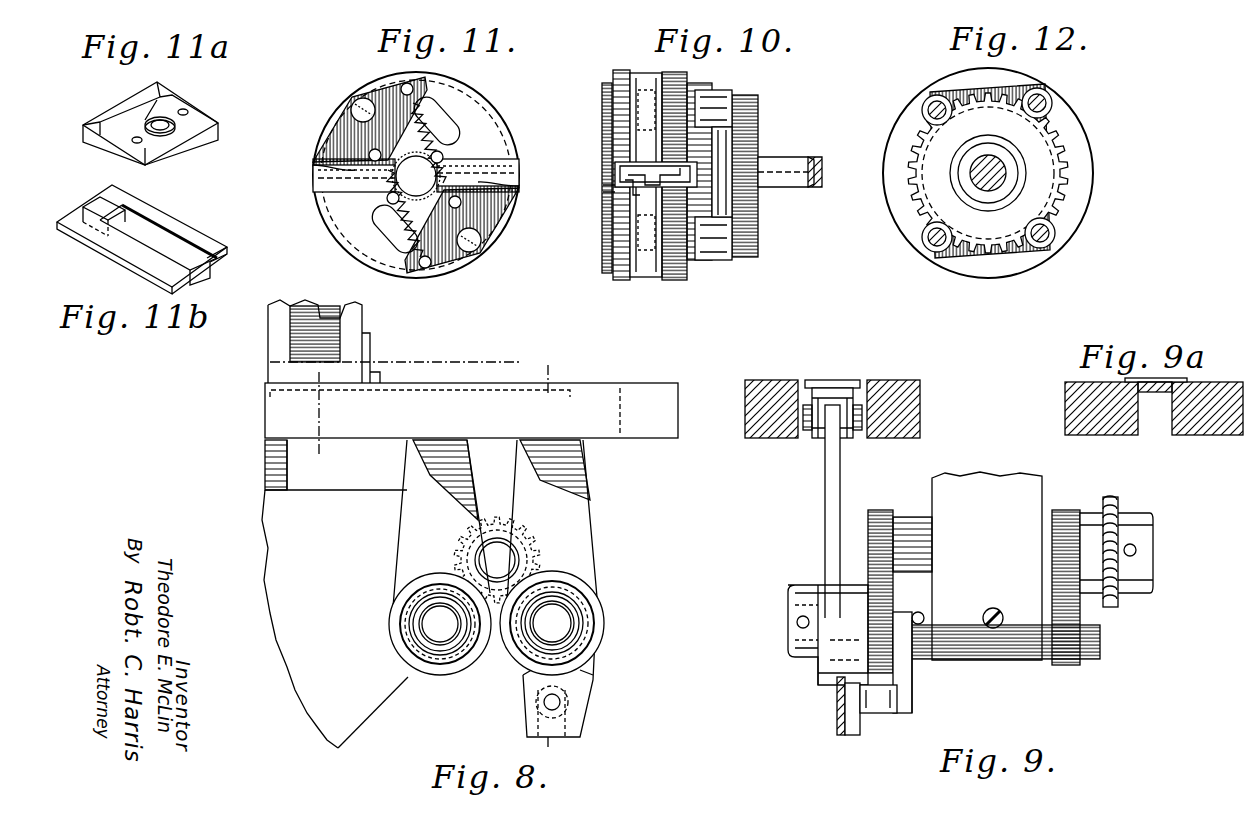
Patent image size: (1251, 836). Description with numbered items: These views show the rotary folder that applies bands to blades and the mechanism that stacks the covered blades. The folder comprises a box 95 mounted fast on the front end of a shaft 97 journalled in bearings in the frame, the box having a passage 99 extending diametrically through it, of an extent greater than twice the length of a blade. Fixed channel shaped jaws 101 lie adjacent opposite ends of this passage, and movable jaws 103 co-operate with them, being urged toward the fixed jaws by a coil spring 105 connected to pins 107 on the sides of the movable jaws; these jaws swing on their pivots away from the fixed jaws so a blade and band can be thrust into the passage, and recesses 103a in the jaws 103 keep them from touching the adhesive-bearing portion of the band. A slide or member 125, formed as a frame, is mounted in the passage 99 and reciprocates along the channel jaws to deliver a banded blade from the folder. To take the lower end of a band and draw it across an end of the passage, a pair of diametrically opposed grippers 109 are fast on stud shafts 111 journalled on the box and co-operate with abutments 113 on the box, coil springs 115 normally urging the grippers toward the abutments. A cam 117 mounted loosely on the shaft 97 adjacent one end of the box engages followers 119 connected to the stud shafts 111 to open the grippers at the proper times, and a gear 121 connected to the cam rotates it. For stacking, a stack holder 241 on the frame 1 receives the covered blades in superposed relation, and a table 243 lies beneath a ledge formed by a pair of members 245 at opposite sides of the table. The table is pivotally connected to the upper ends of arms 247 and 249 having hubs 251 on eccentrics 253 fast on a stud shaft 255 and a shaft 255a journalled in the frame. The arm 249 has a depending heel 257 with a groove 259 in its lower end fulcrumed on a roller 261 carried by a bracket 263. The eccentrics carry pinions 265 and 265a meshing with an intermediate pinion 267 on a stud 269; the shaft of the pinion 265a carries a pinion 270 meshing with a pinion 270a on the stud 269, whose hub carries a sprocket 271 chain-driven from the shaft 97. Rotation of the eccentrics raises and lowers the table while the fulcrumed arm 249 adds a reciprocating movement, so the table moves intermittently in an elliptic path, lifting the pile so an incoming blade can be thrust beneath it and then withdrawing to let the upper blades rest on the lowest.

In FIG. 8, the frame wall 1 is at (358, 710).
In FIG. 11, the box 95 is at (500, 236).
In FIG. 12, the box 95 is at (1075, 215).
In FIG. 10, the shaft 97 is at (770, 190).
In FIG. 12, the shaft 97 is at (1000, 180).
In FIG. 11, the passage 99 is at (500, 166).
In FIG. 11A, the fixed channel shaped jaws 101 is at (148, 146).
In FIG. 11, the fixed channel shaped jaws 101 is at (335, 186).
In FIG. 10, the fixed channel shaped jaws 101 is at (657, 165).
In FIG. 11, the movable jaws 103 is at (322, 160).
In FIG. 10, the recesses 103a is at (648, 175).
In FIG. 11, the coil spring 105 is at (412, 180).
In FIG. 10, the coil spring 105 is at (613, 185).
In FIG. 11, the pins 107 is at (372, 152).
In FIG. 11, the grippers 109 is at (392, 80).
In FIG. 11, the stud shafts 111 is at (358, 100).
In FIG. 11, the abutments 113 is at (440, 84).
In FIG. 11, the coil springs 115 is at (443, 156).
In FIG. 10, the coil springs 115 is at (606, 140).
In FIG. 10, the cam 117 is at (727, 235).
In FIG. 12, the cam 117 is at (1063, 140).
In FIG. 10, the followers 119 is at (718, 97).
In FIG. 12, the followers 119 is at (1005, 88).
In FIG. 10, the gear 121 is at (756, 242).
In FIG. 12, the gear 121 is at (1027, 168).
In FIG. 11B, the slide or member 125 is at (125, 256).
In FIG. 10, the slide or member 125 is at (662, 184).
In FIG. 8, the stack holder 241 is at (352, 327).
In FIG. 8, the table 243 is at (497, 388).
In FIG. 9, the table 243 is at (830, 388).
In FIG. 9A, the table 243 is at (1155, 393).
In FIG. 9, the ledge members 245 is at (790, 380).
In FIG. 9A, the ledge members 245 is at (1083, 381).
In FIG. 8, the arm 247 is at (410, 520).
In FIG. 8, the arm 249 is at (583, 506).
In FIG. 9, the arm 249 is at (823, 478).
In FIG. 8, the hubs 251 is at (392, 637).
In FIG. 8, the eccentrics 253 is at (408, 615).
In FIG. 9, the eccentrics 253 is at (996, 642).
In FIG. 8, the stud shaft 255 is at (553, 613).
In FIG. 8, the shaft 255a is at (438, 612).
In FIG. 9, the heel 257 is at (836, 698).
In FIG. 9, the groove 259 is at (852, 725).
In FIG. 9, the roller 261 is at (858, 703).
In FIG. 9, the bracket 263 is at (905, 697).
In FIG. 8, the pinion 265 is at (540, 587).
In FIG. 9, the pinion 265 is at (877, 590).
In FIG. 8, the pinion 265a is at (445, 572).
In FIG. 8, the intermediate pinion 267 is at (500, 528).
In FIG. 9, the intermediate pinion 267 is at (867, 520).
In FIG. 8, the stud 269 is at (516, 546).
In FIG. 9, the pinion 270 is at (1058, 657).
In FIG. 9, the pinion 270a is at (1060, 513).
In FIG. 9, the sprocket 271 is at (1117, 502).